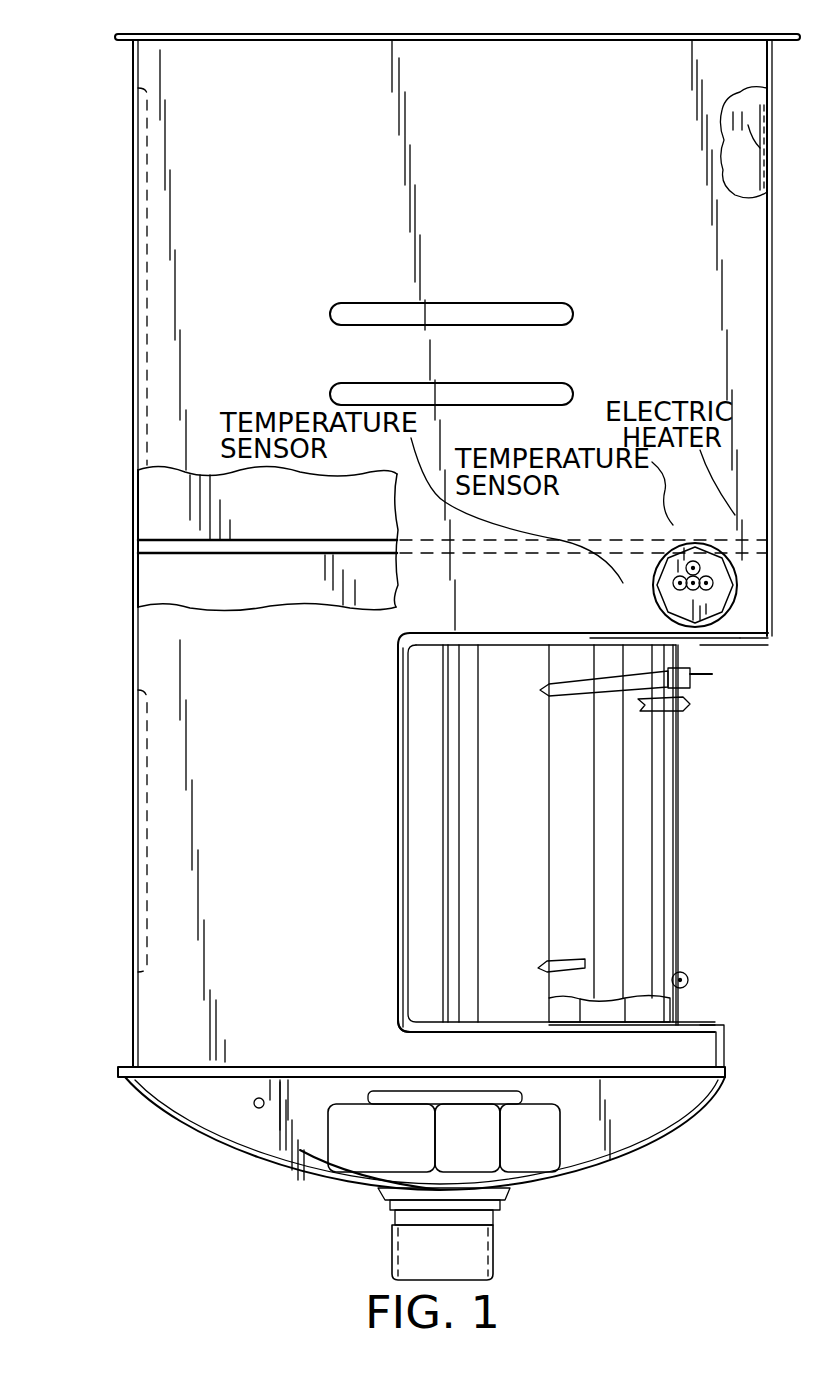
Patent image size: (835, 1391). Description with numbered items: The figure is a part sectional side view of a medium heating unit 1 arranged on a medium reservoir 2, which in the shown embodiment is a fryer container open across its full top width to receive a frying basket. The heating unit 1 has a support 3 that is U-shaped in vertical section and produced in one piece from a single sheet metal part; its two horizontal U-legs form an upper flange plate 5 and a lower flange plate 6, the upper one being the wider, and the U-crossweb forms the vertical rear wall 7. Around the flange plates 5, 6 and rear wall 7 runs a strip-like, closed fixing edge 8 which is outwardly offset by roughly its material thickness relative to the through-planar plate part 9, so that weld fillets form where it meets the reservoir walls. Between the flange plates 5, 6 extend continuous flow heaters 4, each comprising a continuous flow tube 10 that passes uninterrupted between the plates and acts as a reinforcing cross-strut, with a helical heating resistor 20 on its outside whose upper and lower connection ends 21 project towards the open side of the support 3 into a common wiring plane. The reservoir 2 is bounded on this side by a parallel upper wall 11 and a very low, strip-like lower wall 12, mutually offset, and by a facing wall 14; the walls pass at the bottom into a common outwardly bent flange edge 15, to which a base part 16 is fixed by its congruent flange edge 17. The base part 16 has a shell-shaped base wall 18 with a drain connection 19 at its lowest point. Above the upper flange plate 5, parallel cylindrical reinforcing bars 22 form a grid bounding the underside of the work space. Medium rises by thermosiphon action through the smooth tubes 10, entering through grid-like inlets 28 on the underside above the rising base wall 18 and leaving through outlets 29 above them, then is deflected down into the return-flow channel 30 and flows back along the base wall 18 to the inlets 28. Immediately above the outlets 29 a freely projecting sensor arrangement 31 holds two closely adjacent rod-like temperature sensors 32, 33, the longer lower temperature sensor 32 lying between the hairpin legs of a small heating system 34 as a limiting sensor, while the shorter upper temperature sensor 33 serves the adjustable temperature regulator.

The medium heating unit 1 is at (748, 767).
The medium reservoir 2 is at (76, 96).
The support 3 is at (372, 1029).
The continuous flow heater 4 is at (690, 838).
The upper flange plate 5 is at (515, 632).
The lower flange plate 6 is at (515, 1028).
The rear wall 7 is at (398, 795).
The fixing edge 8 is at (752, 632).
The plate part 9 is at (503, 648).
The continuous flow tube 10 is at (548, 800).
The upper wall 11 is at (743, 142).
The lower wall 12 is at (718, 1045).
The facing wall 14 is at (140, 580).
The flange edge 15 is at (124, 1066).
The base part 16 is at (308, 1210).
The flange edge 17 is at (126, 1078).
The base wall 18 is at (238, 1150).
The drain connection 19 is at (482, 1215).
The heating resistor 20 is at (588, 684).
The connection end 21 is at (708, 672).
The reinforcing bar 22 is at (335, 540).
The inlet 28 is at (600, 1030).
The outlet 29 is at (596, 632).
The return-flow channel 30 is at (298, 636).
The sensor arrangement 31 is at (650, 527).
The temperature sensor 32 is at (673, 586).
The temperature sensor 33 is at (693, 561).
The heating system 34 is at (708, 576).